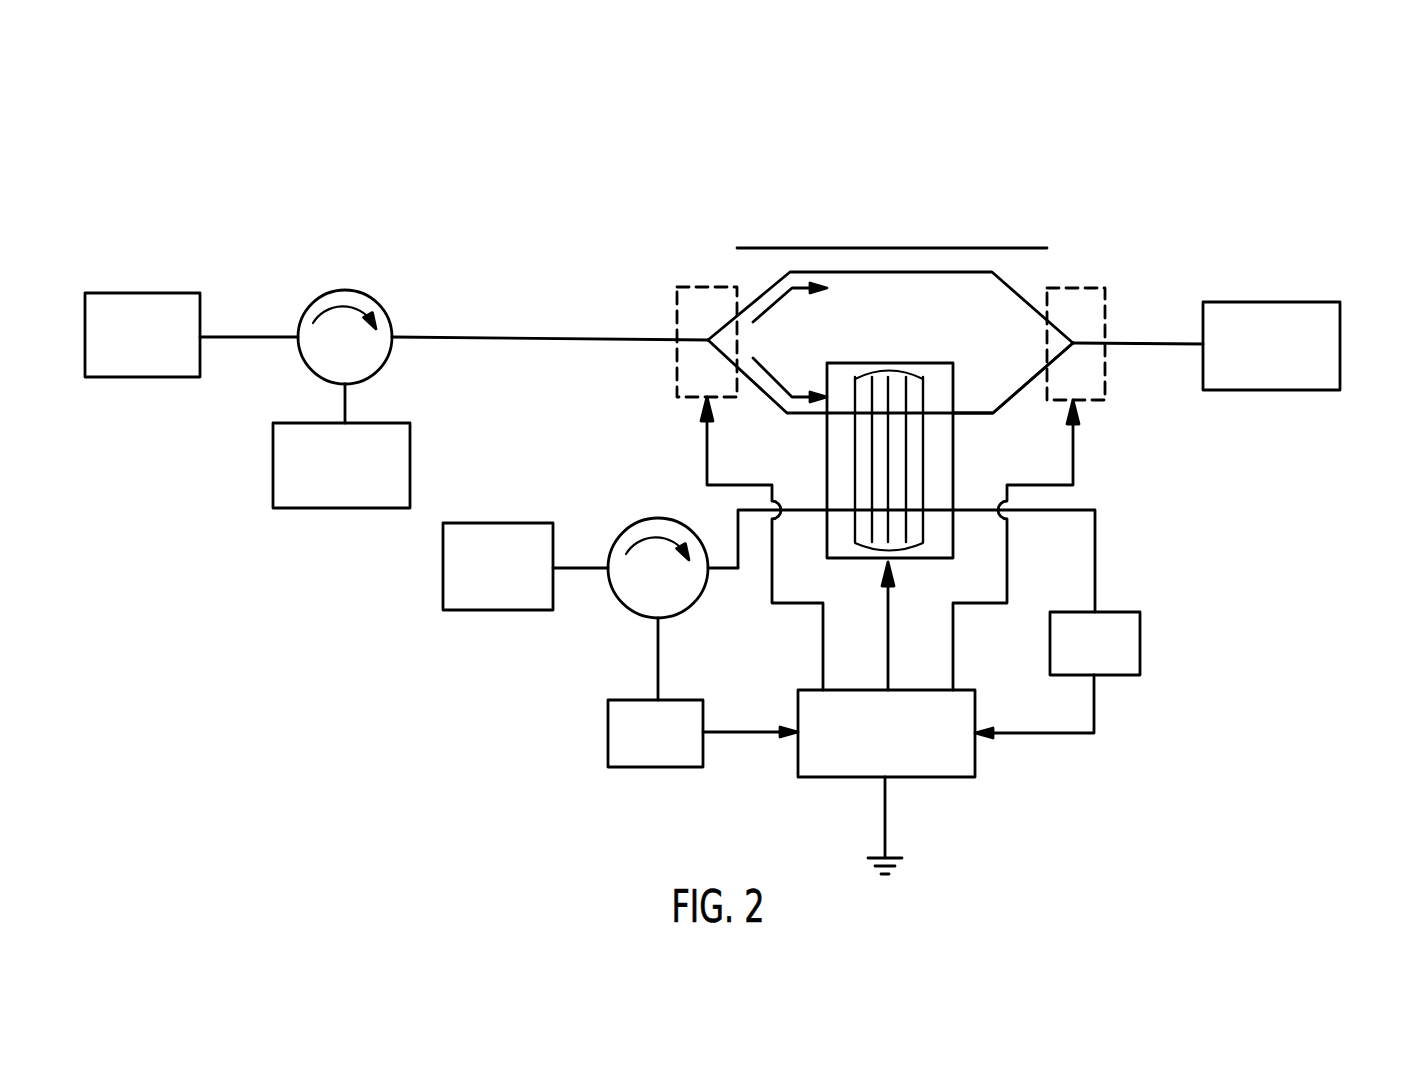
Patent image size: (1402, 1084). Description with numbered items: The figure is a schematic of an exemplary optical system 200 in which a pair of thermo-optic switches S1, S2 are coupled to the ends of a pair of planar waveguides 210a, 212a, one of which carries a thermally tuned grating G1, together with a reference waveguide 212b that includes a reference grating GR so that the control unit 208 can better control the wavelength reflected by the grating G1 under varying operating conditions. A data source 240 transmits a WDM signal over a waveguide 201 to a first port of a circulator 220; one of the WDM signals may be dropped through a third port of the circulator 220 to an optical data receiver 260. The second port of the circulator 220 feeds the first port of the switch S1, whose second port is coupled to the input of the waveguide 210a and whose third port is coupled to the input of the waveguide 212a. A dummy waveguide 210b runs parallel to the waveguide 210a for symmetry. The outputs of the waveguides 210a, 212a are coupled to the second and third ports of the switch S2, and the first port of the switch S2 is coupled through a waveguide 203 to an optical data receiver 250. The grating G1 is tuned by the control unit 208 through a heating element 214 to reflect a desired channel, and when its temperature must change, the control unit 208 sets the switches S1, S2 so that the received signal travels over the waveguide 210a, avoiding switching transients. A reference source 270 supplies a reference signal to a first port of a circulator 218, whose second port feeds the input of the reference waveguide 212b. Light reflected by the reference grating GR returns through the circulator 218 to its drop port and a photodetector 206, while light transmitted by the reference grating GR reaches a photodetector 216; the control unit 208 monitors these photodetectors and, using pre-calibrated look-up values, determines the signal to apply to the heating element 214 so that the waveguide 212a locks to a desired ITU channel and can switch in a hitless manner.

The optical system 200 is at (1165, 145).
The waveguide 201 is at (240, 338).
The waveguide 203 is at (1145, 346).
The photodetector 206 is at (680, 700).
The control unit 208 is at (962, 690).
The waveguide 210a is at (962, 272).
The dummy waveguide 210b is at (837, 248).
The waveguide 212a is at (1012, 403).
The reference waveguide 212b is at (808, 507).
The heating element 214 is at (917, 562).
The photodetector 216 is at (1127, 612).
The circulator 218 is at (668, 520).
The circulator 220 is at (357, 289).
The data source 240 is at (185, 293).
The optical data receiver 250 is at (1325, 302).
The optical data receiver 260 is at (367, 423).
The reference source 270 is at (485, 523).
The thermo-optic switch S1 is at (703, 287).
The thermo-optic switch S2 is at (1083, 288).
The grating G1 is at (892, 363).
The reference grating GR is at (887, 550).